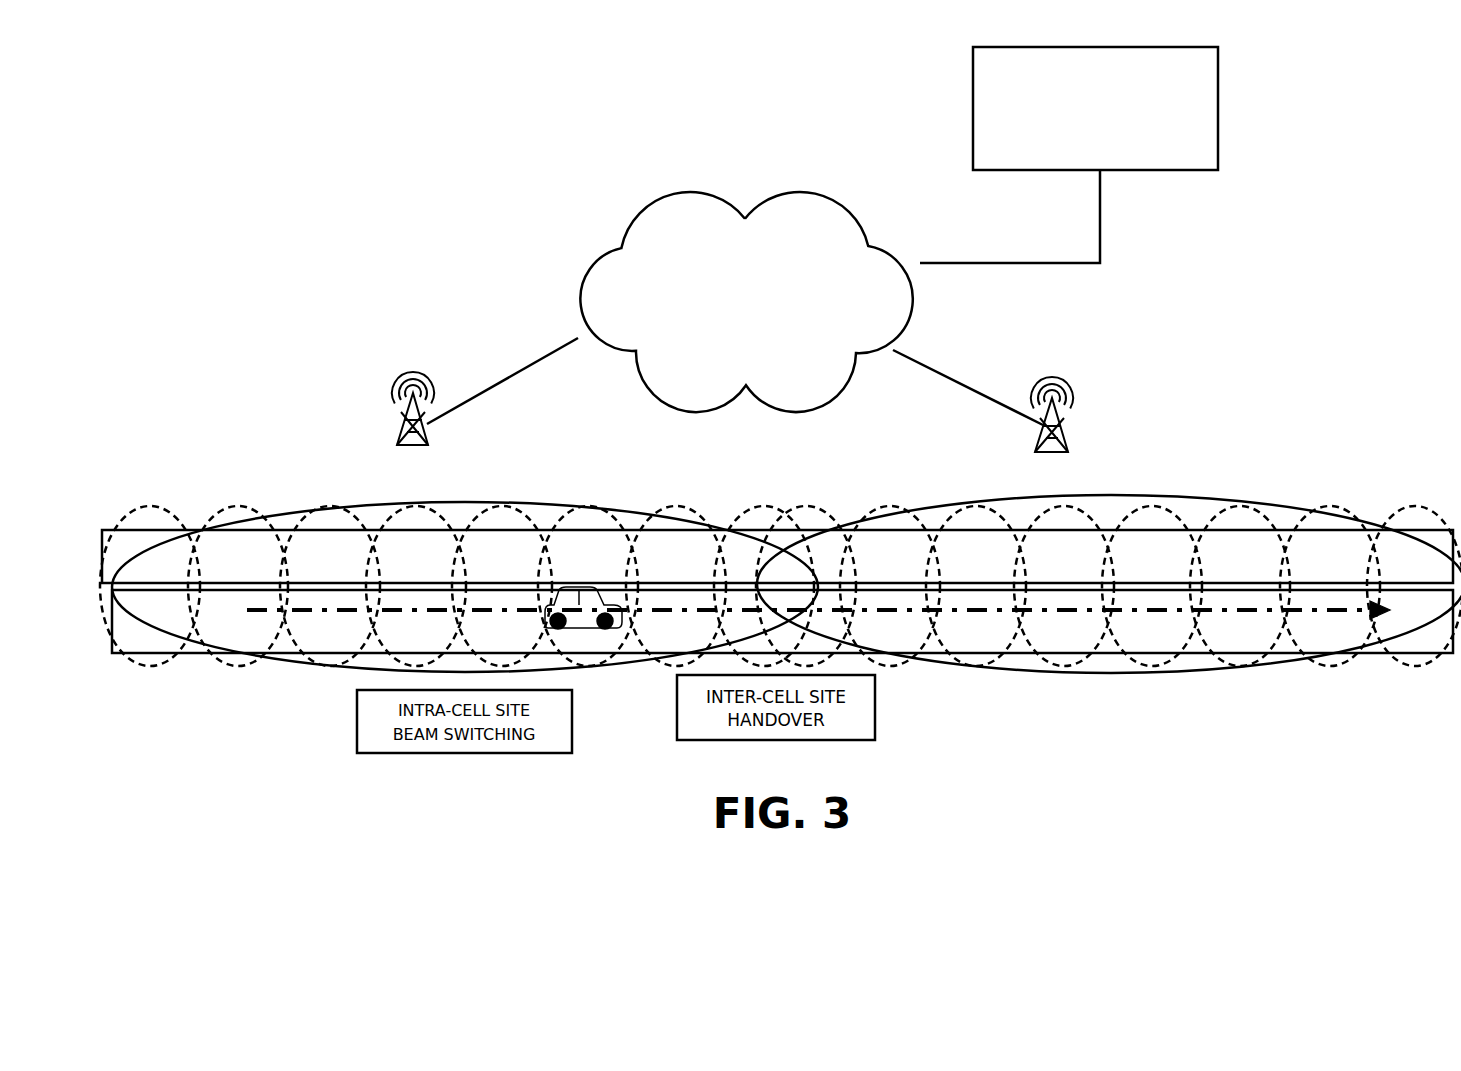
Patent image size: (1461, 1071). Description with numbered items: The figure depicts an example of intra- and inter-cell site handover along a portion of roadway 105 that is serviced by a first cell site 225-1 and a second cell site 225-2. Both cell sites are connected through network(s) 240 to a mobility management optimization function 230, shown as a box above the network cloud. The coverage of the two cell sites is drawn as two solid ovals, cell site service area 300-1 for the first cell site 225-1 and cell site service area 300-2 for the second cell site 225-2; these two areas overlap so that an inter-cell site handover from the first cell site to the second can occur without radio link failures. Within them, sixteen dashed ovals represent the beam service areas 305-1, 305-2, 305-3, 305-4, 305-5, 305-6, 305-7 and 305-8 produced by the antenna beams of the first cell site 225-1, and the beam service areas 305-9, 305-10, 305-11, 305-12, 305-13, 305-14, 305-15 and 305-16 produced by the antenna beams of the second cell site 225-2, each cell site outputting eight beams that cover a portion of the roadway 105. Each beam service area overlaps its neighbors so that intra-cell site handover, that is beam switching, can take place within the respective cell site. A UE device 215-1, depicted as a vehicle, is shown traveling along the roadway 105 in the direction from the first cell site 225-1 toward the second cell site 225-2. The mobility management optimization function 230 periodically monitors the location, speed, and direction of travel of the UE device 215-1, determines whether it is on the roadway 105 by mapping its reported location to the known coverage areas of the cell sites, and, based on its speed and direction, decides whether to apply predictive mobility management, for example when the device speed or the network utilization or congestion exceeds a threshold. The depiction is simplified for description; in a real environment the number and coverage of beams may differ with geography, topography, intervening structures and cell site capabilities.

The roadway 105 is at (1352, 557).
The UE device 215-1 is at (567, 605).
The first cell site 225-1 is at (427, 424).
The second cell site 225-2 is at (1070, 418).
The mobility management optimization function 230 is at (1190, 148).
The network(s) 240 is at (746, 302).
The cell site service area 300-1 is at (287, 517).
The cell site service area 300-2 is at (1277, 513).
The beam service area 305-1 is at (150, 662).
The beam service area 305-2 is at (258, 647).
The beam service area 305-3 is at (327, 660).
The beam service area 305-4 is at (392, 517).
The beam service area 305-5 is at (468, 517).
The beam service area 305-6 is at (583, 660).
The beam service area 305-7 is at (657, 657).
The beam service area 305-8 is at (728, 523).
The beam service area 305-9 is at (837, 523).
The beam service area 305-10 is at (893, 660).
The beam service area 305-11 is at (1007, 655).
The beam service area 305-12 is at (1072, 655).
The beam service area 305-13 is at (1150, 663).
The beam service area 305-14 is at (1217, 662).
The beam service area 305-15 is at (1335, 655).
The beam service area 305-16 is at (1413, 655).